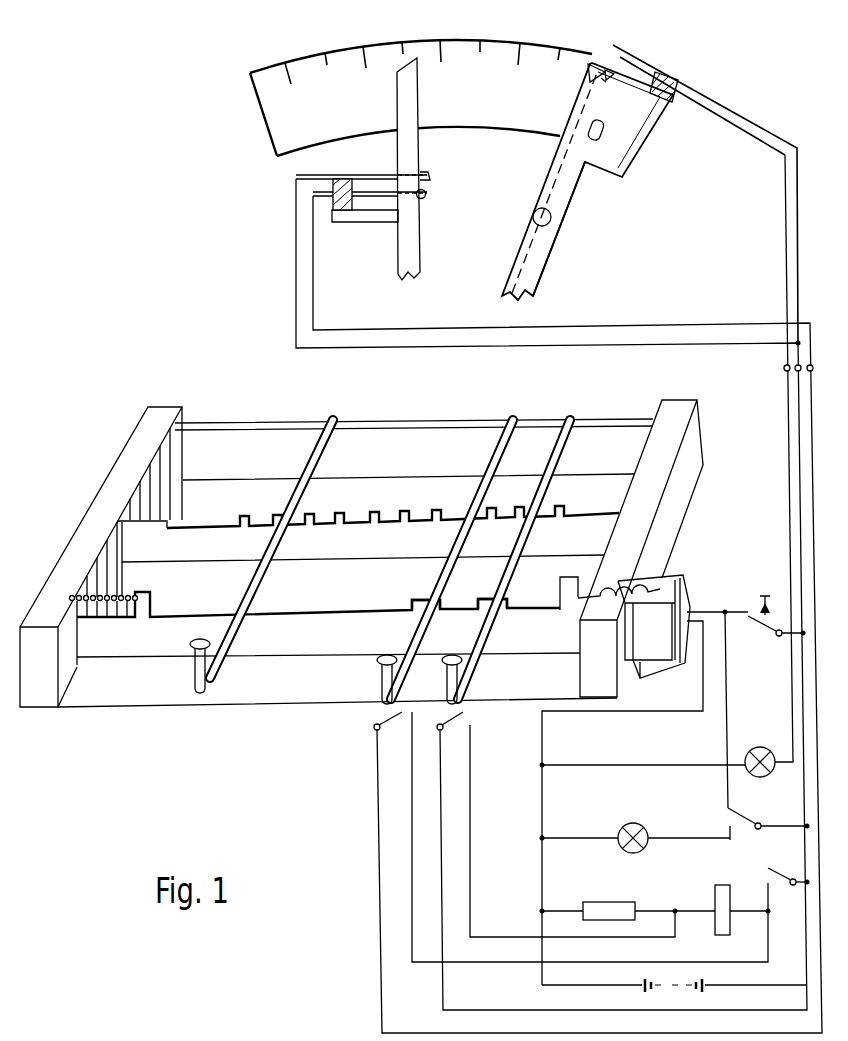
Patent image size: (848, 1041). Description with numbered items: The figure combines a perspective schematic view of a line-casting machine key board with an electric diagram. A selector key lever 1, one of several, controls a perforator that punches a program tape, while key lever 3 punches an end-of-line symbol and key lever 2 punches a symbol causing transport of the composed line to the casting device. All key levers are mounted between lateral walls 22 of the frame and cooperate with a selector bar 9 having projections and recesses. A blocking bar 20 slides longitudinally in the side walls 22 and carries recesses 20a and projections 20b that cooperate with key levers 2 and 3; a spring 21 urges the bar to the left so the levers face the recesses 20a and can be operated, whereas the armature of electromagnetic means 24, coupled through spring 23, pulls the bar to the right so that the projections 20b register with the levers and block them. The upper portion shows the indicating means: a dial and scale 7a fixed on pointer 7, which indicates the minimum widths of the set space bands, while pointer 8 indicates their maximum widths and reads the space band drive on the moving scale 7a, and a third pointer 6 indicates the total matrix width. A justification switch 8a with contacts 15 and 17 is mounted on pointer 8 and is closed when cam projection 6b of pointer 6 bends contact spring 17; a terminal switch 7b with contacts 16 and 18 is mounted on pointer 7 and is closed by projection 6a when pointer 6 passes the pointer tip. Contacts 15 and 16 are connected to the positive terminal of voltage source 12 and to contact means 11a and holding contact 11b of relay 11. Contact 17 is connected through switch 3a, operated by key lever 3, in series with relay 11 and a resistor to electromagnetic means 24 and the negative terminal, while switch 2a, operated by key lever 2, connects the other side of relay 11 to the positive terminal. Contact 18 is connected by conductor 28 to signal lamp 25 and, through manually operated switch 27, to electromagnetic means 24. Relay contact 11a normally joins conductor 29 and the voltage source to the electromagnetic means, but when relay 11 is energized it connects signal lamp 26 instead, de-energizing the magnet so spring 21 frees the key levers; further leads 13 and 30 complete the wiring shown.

The selector key lever 1 is at (331, 415).
The key lever 2 is at (569, 415).
The key lever 3 is at (511, 415).
The switch 2a is at (556, 824).
The switch 3a is at (383, 717).
The third pointer 6 is at (512, 282).
The projection 6a is at (603, 80).
The cam projection 6b is at (532, 219).
The pointer 7 is at (568, 208).
The dial and scale 7a is at (283, 110).
The terminal switch 7b is at (660, 67).
The pointer 8 is at (405, 247).
The justification switch 8a is at (357, 176).
The selector bar 9 is at (378, 540).
The relay 11 is at (718, 898).
The relay contact means 11a is at (769, 830).
The holding contact means 11b is at (787, 888).
The source of voltage 12 is at (674, 976).
The lead 13 is at (727, 679).
The contact 15 is at (428, 176).
The contact 16 is at (646, 58).
The contact spring 17 is at (426, 194).
The contact spring 18 is at (600, 66).
The blocking bar 20 is at (153, 645).
The recesses 20a is at (462, 605).
The projections 20b is at (414, 604).
The spring 21 is at (125, 603).
The lateral walls 22 is at (158, 410).
The spring 23 is at (585, 578).
The electromagnetic means 24 is at (657, 605).
The signal lamp 25 is at (760, 747).
The signal lamp 26 is at (641, 823).
The manually operated switch 27 is at (774, 622).
The conductor 28 is at (789, 495).
The conductor 29 is at (400, 347).
The lead 30 is at (348, 330).